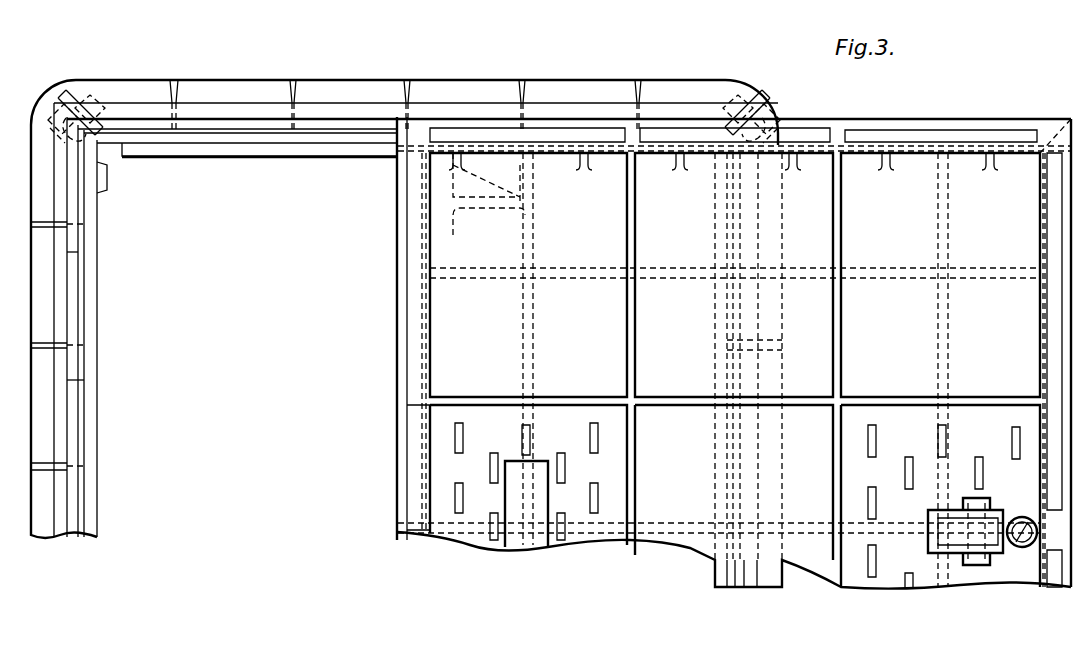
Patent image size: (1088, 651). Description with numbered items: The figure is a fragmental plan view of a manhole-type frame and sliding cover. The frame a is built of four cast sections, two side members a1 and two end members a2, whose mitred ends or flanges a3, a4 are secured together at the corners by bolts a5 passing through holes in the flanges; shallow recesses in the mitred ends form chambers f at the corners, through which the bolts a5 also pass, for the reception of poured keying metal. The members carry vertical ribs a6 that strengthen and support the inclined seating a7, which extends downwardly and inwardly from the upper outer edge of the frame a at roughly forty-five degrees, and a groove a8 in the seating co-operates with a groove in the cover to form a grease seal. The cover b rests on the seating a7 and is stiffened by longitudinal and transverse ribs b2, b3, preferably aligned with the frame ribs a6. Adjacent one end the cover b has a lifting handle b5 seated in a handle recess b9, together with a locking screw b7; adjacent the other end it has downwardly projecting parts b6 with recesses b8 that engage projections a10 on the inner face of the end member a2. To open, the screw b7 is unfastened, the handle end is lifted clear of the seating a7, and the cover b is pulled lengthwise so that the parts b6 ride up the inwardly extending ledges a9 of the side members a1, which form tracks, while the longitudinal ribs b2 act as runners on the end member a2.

The frame a is at (347, 90).
The side member a1 is at (193, 108).
The end member a2 is at (97, 292).
The mitred flange a3 is at (65, 95).
The mitred flange a4 is at (52, 106).
The bolt a5 is at (88, 92).
The vertical rib a6 is at (292, 82).
The inclined seating a7 is at (268, 140).
The groove a8 is at (228, 130).
The ledge a9 is at (207, 150).
The projection a10 is at (110, 172).
The cover b is at (440, 302).
The longitudinal strengthening rib b2 is at (564, 274).
The transverse strengthening rib b3 is at (530, 224).
The lifting handle b5 is at (980, 525).
The downwardly projecting part b6 is at (453, 169).
The screw b7 is at (1028, 548).
The recess b8 is at (453, 202).
The handle recess b9 is at (948, 528).
The chamber f is at (52, 82).